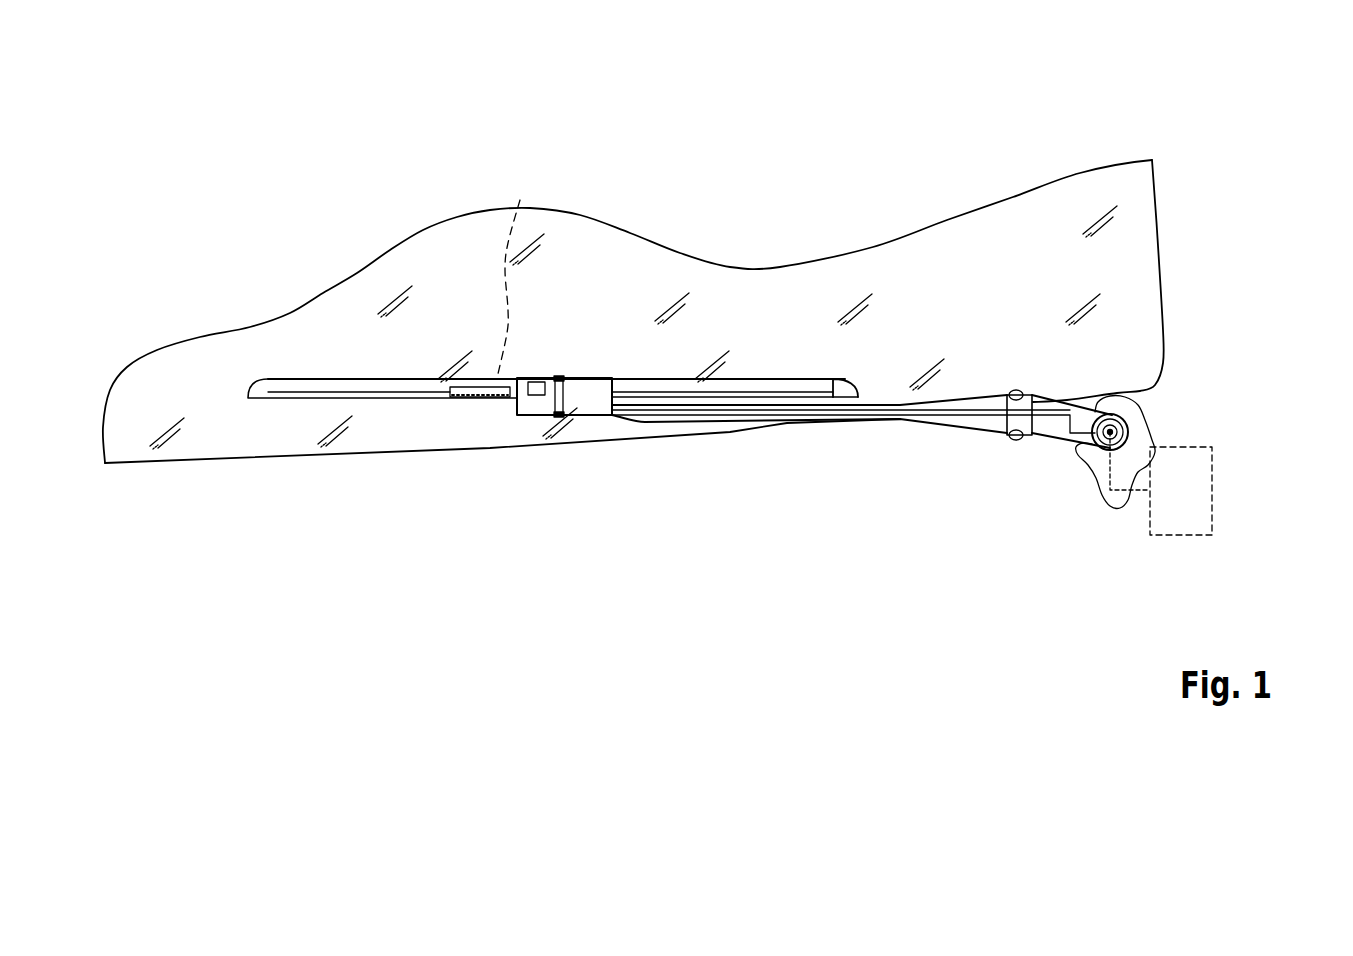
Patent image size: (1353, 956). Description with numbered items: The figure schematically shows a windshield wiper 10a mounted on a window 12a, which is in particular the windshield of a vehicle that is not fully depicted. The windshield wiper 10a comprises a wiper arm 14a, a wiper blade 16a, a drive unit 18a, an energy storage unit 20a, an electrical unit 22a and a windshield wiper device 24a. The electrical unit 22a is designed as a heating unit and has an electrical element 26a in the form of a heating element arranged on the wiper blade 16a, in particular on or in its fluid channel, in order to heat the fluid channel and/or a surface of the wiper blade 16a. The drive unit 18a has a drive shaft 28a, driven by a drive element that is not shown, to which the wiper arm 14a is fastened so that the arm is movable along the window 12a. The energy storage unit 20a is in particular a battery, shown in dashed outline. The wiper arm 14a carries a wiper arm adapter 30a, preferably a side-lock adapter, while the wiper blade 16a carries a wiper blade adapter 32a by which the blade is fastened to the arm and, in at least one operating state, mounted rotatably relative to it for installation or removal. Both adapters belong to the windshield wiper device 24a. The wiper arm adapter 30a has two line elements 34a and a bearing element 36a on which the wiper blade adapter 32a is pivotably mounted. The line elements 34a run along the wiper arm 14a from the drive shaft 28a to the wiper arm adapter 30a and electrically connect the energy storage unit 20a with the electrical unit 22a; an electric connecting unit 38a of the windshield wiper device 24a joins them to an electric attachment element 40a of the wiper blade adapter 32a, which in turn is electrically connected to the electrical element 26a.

The windshield wiper 10a is at (1199, 119).
The window 12a is at (872, 265).
The wiper arm 14a is at (876, 426).
The wiper blade 16a is at (388, 375).
The drive unit 18a is at (1209, 373).
The energy storage unit 20a is at (1218, 500).
The electrical unit 22a is at (482, 314).
The windshield wiper device 24a is at (558, 459).
The electrical element 26a is at (523, 273).
The drive shaft 28a is at (1130, 426).
The wiper arm adapter 30a is at (590, 426).
The wiper blade adapter 32a is at (590, 361).
The line elements 34a is at (860, 423).
The bearing element 36a is at (565, 417).
The electric connecting unit 38a is at (493, 420).
The electric attachment element 40a is at (537, 378).